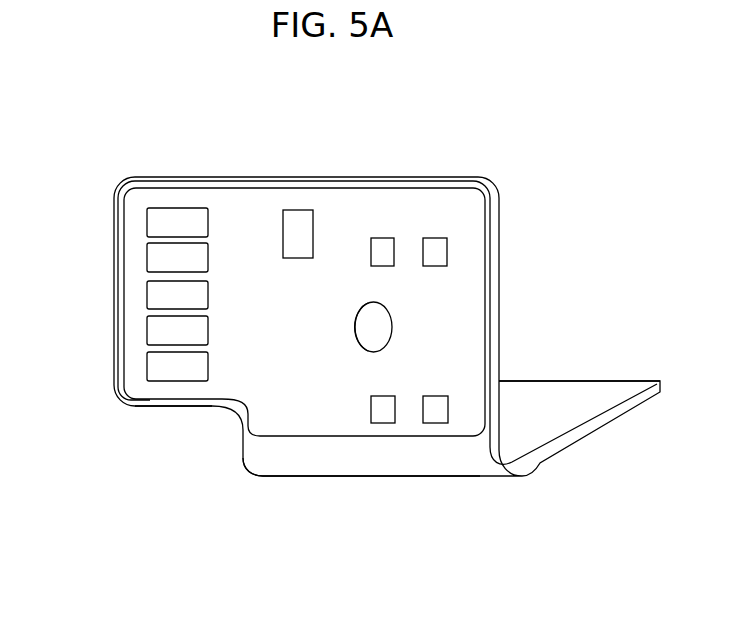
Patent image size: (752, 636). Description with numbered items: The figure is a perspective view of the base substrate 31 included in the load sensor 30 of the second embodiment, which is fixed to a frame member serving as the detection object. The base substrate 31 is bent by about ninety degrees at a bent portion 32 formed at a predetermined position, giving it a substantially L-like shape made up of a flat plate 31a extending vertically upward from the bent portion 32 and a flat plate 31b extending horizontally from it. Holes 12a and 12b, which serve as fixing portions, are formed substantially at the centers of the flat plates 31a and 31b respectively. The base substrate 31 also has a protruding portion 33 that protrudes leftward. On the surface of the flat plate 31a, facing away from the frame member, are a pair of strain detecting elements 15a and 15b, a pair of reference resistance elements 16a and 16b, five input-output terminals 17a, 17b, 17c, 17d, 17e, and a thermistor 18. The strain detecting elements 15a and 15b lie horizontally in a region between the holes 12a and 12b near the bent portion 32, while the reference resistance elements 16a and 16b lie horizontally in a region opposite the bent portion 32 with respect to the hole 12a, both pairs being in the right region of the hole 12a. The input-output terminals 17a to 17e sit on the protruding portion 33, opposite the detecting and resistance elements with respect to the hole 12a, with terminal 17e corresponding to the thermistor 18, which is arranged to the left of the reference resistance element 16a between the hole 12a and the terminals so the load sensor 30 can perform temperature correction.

The load sensor 30 is at (488, 107).
The base substrate 31 is at (476, 176).
The flat plate 31a is at (496, 231).
The flat plate 31b is at (597, 423).
The bent portion 32 is at (269, 483).
The protruding portion 33 is at (176, 406).
The hole 12a is at (390, 328).
The hole 12b is at (516, 368).
The thermistor 18 is at (298, 218).
The reference resistance element 16a is at (383, 245).
The reference resistance element 16b is at (437, 245).
The strain detecting element 15a is at (383, 418).
The strain detecting element 15b is at (434, 418).
The input-output terminal 17a is at (156, 218).
The input-output terminal 17b is at (156, 255).
The input-output terminal 17c is at (156, 292).
The input-output terminal 17d is at (156, 327).
The input-output terminal 17e is at (156, 362).